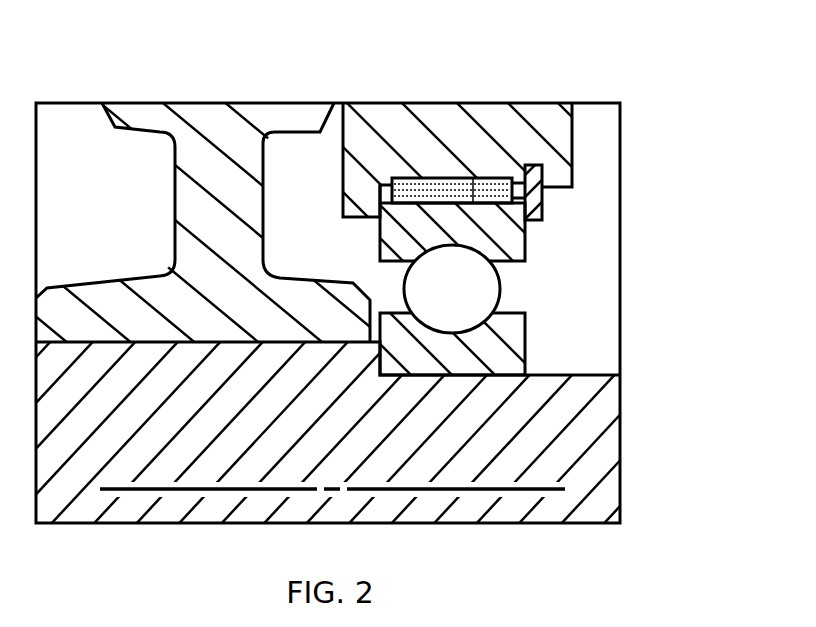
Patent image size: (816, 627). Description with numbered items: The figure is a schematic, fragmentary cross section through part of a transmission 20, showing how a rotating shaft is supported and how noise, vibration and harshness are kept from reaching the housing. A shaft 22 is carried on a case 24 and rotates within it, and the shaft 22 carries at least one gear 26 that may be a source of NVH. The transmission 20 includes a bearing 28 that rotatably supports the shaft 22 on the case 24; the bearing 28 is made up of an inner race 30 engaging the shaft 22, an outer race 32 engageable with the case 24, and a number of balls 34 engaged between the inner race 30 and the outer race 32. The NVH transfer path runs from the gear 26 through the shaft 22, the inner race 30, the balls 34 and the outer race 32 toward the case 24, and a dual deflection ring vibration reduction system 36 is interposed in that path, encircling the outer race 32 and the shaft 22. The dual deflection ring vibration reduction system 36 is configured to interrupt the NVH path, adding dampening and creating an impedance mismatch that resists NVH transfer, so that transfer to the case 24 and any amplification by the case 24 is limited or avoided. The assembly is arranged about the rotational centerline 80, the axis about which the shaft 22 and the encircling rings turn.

The transmission 20 is at (652, 124).
The shaft 22 is at (522, 452).
The case 24 is at (545, 120).
The gear 26 is at (185, 165).
The bearing 28 is at (540, 296).
The inner race 30 is at (513, 358).
The outer race 32 is at (525, 231).
The balls 34 is at (434, 306).
The dual deflection ring vibration reduction system 36 is at (481, 178).
The rotational centerline 80 is at (233, 491).